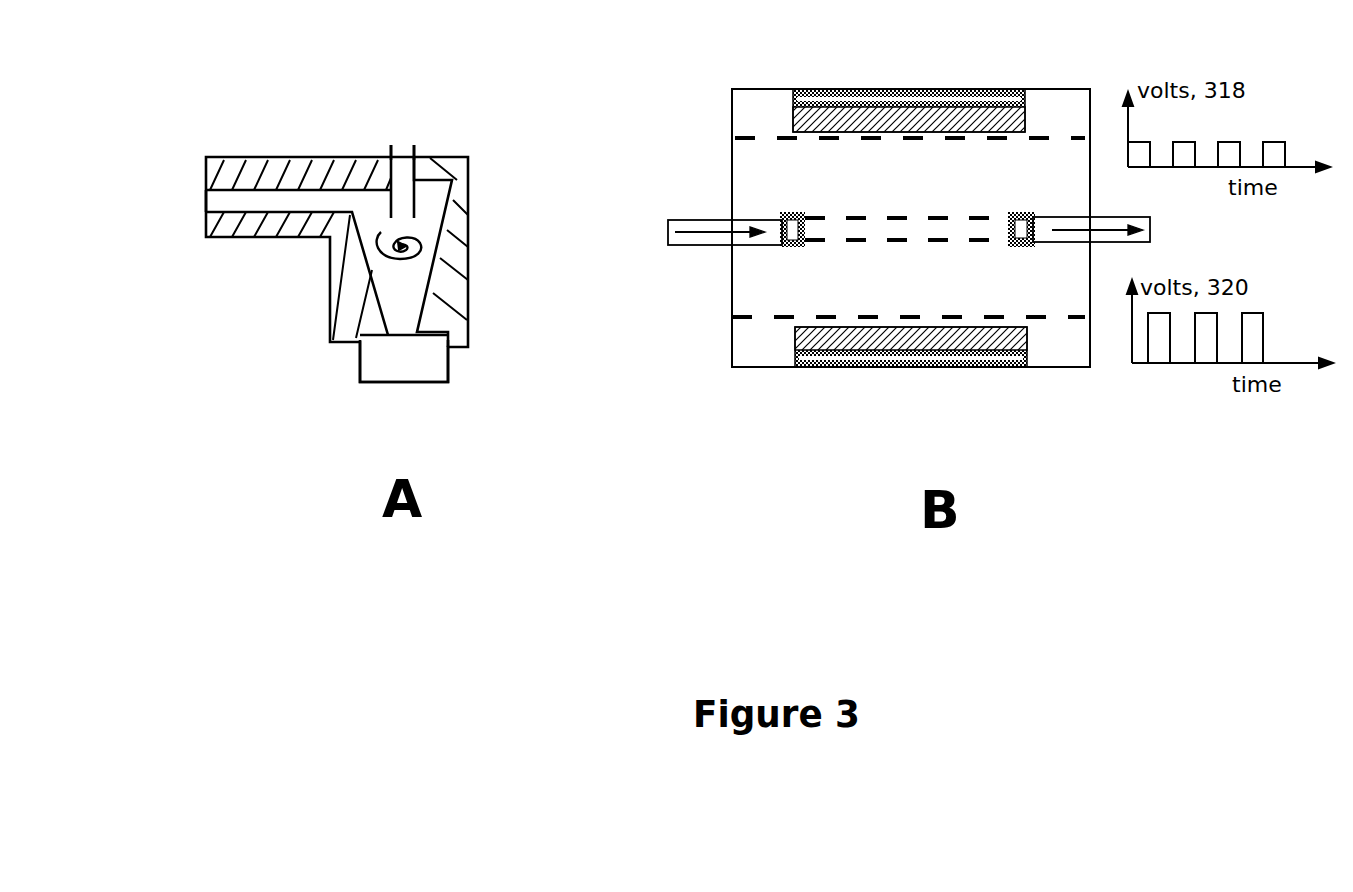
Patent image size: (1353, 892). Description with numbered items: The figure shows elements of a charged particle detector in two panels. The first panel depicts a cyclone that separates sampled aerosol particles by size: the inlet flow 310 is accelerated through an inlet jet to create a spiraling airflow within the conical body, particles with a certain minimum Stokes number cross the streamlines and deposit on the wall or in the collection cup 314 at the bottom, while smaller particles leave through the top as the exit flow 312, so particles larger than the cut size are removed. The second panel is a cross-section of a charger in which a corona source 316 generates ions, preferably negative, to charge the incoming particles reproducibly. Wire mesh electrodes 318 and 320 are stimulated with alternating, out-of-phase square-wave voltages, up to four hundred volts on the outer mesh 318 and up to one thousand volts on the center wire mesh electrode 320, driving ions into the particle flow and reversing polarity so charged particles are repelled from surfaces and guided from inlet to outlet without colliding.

The inlet flow 310 is at (280, 203).
The exit flow 312 is at (402, 188).
The collection cup 314 is at (412, 360).
The corona source 316 is at (952, 118).
The wire mesh electrode 318 is at (732, 138).
The center wire mesh electrode 320 is at (813, 218).